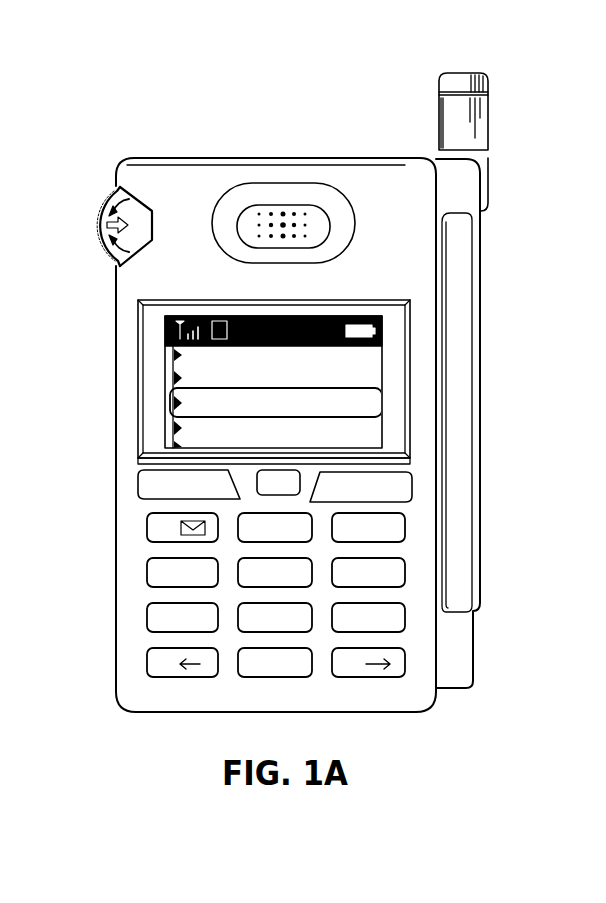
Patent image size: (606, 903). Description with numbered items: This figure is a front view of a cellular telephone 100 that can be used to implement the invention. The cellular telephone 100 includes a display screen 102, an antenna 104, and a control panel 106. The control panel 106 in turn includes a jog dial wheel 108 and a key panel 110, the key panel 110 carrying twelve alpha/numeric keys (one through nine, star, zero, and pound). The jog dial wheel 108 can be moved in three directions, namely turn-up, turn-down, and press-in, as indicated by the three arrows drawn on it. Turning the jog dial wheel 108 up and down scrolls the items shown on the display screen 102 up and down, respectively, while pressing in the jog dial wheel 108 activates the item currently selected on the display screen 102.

The cellular telephone 100 is at (176, 97).
The display screen 102 is at (165, 388).
The antenna 104 is at (490, 112).
The control panel 106 is at (160, 276).
The jog dial wheel 108 is at (100, 238).
The key panel 110 is at (412, 517).